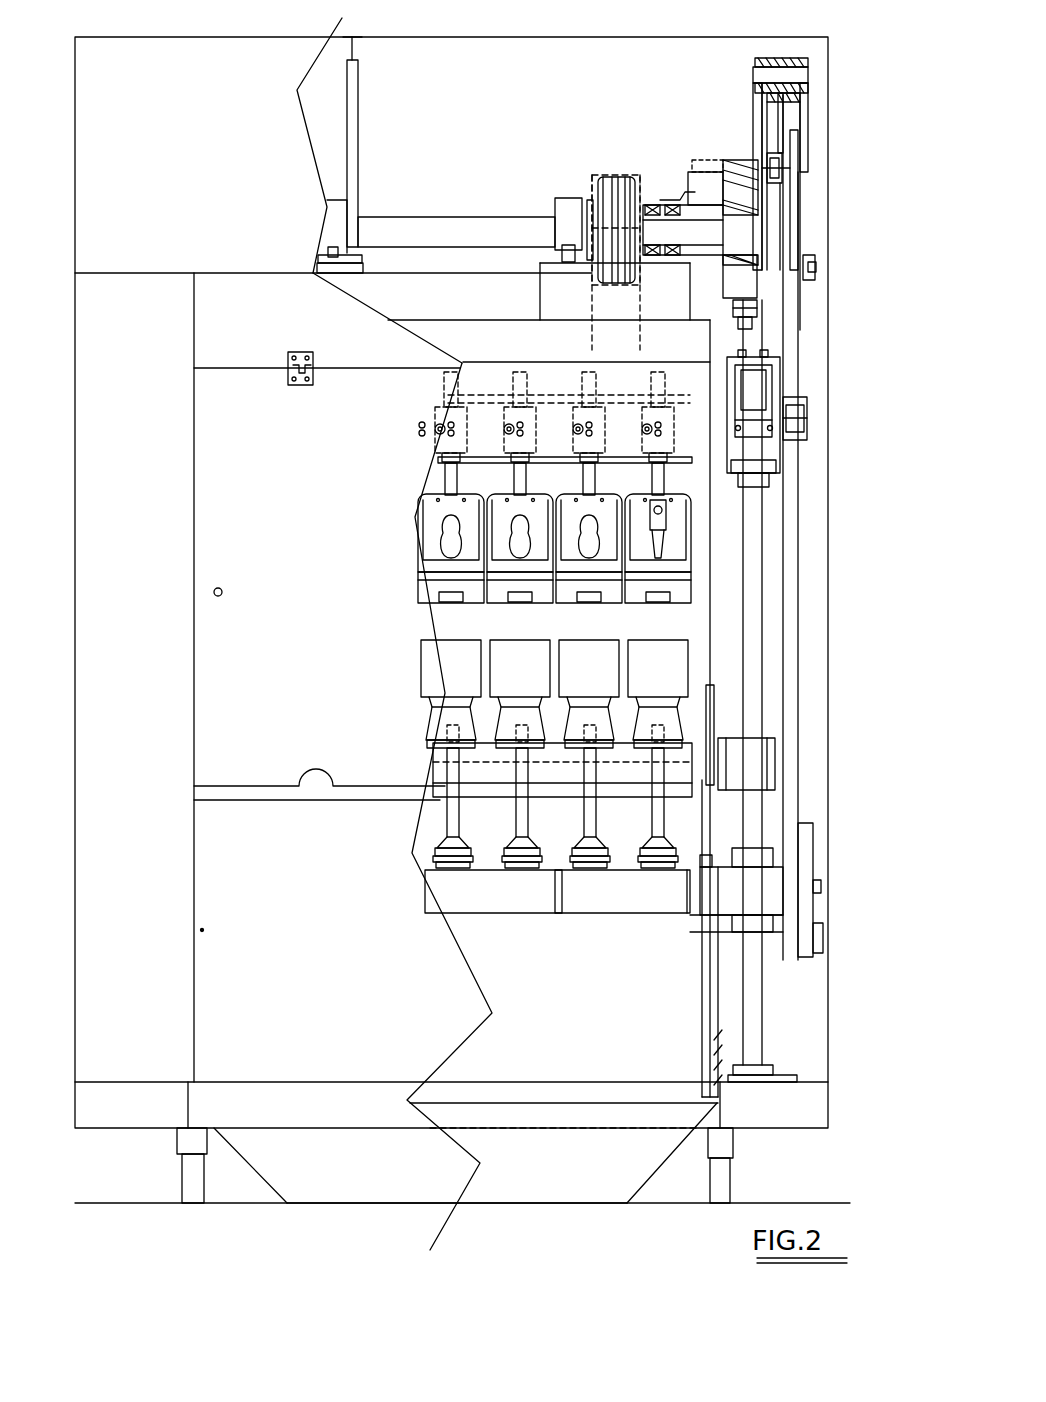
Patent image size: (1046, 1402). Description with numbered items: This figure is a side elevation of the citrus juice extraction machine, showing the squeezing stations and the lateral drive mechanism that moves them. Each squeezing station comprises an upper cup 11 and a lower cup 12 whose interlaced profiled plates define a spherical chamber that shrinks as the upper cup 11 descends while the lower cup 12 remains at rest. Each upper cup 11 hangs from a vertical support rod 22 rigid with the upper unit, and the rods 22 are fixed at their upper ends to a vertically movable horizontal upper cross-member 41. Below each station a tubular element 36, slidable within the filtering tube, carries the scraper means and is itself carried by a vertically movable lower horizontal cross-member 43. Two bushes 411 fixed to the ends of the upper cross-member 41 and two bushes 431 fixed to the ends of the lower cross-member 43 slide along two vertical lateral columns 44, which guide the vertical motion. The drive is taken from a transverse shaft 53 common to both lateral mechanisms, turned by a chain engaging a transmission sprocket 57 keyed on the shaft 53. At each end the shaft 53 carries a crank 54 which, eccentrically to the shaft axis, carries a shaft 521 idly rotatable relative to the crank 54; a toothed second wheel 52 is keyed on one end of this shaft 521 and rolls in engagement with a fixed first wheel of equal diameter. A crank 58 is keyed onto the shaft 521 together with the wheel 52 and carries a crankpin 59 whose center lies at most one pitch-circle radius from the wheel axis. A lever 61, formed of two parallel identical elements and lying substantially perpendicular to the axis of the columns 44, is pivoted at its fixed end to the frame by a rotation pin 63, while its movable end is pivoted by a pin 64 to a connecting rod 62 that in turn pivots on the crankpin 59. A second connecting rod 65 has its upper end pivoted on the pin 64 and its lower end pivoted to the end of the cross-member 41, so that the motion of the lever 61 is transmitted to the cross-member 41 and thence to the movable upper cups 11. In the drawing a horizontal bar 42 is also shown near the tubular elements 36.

The upper cup 11 is at (465, 590).
The lower cup 12 is at (500, 657).
The vertical support rod 22 is at (445, 477).
The tubular element 36 is at (448, 820).
The upper cross-member 41 is at (718, 362).
The bush 411 is at (775, 467).
The cross bar 42 is at (700, 740).
The lower cross-member 43 is at (607, 900).
The bush 431 is at (770, 858).
The vertical lateral column 44 is at (752, 617).
The second wheel 52 is at (703, 160).
The shaft 521 is at (740, 165).
The transverse shaft 53 is at (482, 213).
The crank 54 is at (750, 287).
The transmission sprocket 57 is at (616, 185).
The crank 58 is at (762, 198).
The crankpin 59 is at (782, 168).
The lever 61 is at (752, 92).
The connecting rod 62 is at (777, 108).
The rotation pin 63 is at (808, 147).
The pin 64 is at (772, 66).
The second connecting rod 65 is at (792, 373).